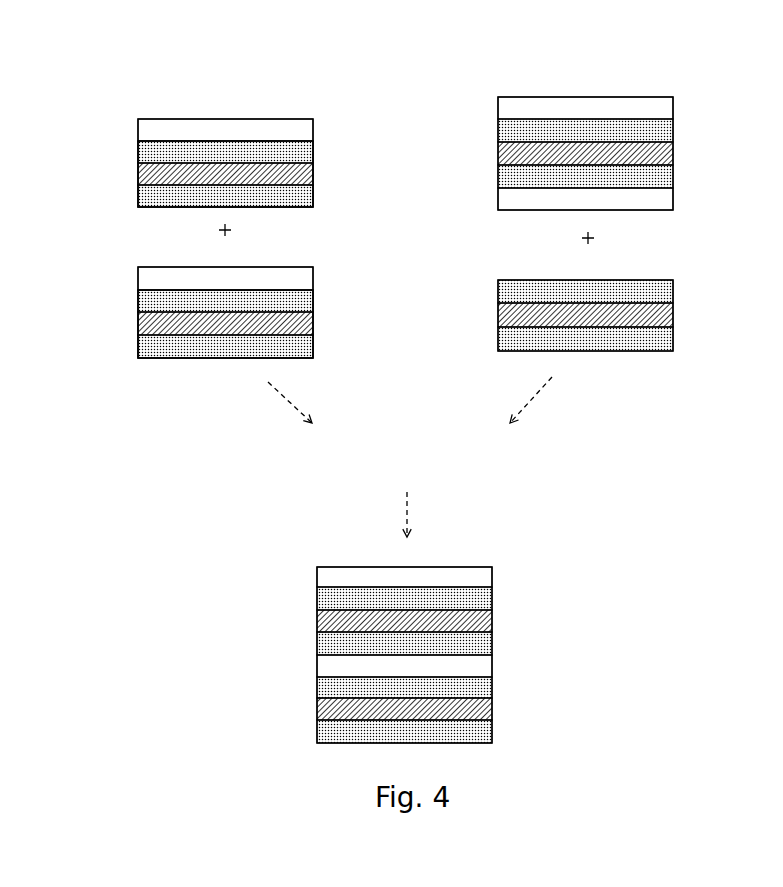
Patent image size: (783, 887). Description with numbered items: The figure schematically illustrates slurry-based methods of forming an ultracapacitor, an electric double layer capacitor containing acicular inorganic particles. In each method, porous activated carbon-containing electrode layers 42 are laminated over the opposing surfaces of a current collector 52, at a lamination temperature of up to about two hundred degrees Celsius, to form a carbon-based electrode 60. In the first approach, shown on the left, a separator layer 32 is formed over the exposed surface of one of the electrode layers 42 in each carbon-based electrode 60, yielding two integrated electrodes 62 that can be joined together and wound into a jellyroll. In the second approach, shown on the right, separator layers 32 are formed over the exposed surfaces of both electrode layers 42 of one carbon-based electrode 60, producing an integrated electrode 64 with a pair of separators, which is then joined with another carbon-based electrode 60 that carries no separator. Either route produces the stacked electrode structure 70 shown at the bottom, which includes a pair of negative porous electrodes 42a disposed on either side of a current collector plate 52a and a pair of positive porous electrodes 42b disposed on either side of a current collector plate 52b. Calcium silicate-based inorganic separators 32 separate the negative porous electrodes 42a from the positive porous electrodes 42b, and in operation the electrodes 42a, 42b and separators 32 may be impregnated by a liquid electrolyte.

The separator layer 32 is at (302, 132).
The porous electrode layer 42 is at (147, 147).
The current collector 52 is at (313, 167).
The carbon-based electrode 60 is at (135, 143).
The integrated electrode 62 is at (212, 98).
The integrated electrode 64 is at (598, 90).
The stacked electrode structure 70 is at (297, 632).
The negative porous electrode 42a is at (493, 592).
The current collector plate 52a is at (493, 618).
The positive porous electrode 42b is at (493, 687).
The current collector plate 52b is at (493, 708).